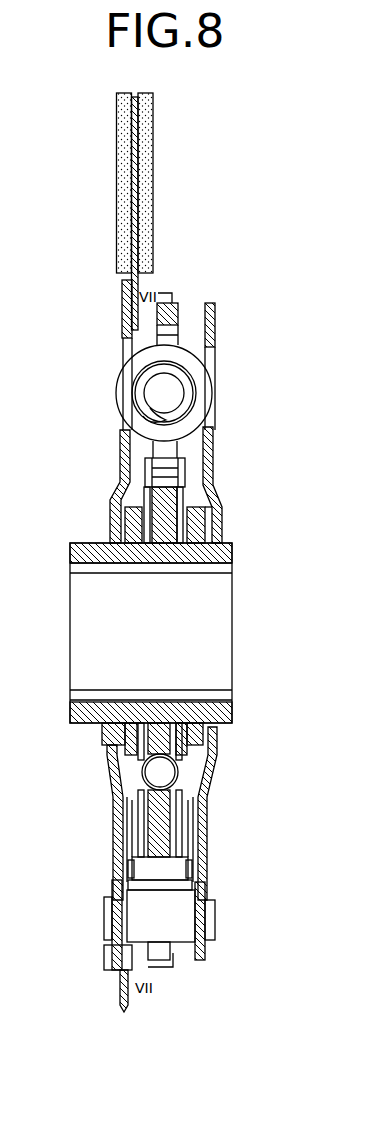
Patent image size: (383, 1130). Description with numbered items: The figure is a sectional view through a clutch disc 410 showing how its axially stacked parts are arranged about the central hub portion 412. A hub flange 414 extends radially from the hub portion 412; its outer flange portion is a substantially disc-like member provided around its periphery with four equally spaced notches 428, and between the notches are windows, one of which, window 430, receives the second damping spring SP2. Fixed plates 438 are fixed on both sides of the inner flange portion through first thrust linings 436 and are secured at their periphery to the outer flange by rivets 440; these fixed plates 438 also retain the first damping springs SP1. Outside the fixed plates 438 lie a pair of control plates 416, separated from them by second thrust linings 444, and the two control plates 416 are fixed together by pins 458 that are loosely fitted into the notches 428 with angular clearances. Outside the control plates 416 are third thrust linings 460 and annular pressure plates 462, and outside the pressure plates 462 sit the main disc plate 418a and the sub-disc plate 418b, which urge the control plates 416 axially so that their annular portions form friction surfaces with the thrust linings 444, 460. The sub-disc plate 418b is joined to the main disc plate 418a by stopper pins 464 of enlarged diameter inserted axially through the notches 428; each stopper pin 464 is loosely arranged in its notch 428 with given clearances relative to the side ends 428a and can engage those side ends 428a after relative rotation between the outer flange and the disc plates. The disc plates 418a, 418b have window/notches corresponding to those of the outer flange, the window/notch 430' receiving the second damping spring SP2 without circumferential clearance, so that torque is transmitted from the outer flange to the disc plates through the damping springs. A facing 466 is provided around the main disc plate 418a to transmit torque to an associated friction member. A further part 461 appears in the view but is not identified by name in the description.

The facing 466 is at (148, 166).
The main disc plate 418a is at (124, 318).
The window 430 is at (191, 304).
The sub-disc plate 418b is at (215, 320).
The window/notch 430' is at (242, 384).
The second damping spring SP2 is at (200, 386).
The rivets 440 is at (213, 452).
The hub flange 414 is at (185, 472).
The fixed plates 438 is at (146, 478).
The control plates 416 is at (118, 488).
The clutch disc 410 is at (231, 521).
The annular pressure plates 462 is at (128, 522).
The central hub portion 412 is at (226, 556).
The third thrust linings 460 is at (133, 546).
The first thrust linings 436 is at (165, 545).
The second thrust linings 444 is at (147, 545).
The housing body 461 is at (226, 720).
The first damping springs SP1 is at (210, 766).
The pins 458 is at (170, 872).
The notches 428 is at (127, 894).
The side ends 428a is at (127, 932).
The stopper pins 464 is at (207, 920).